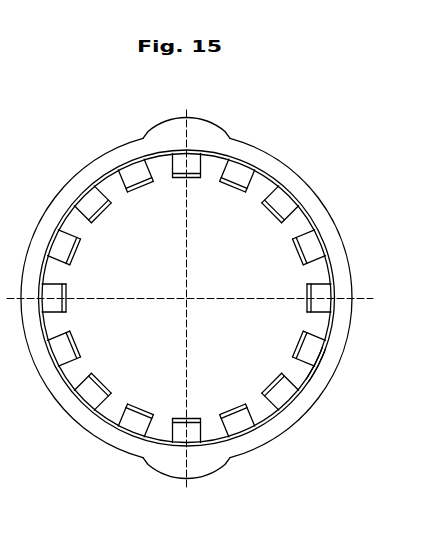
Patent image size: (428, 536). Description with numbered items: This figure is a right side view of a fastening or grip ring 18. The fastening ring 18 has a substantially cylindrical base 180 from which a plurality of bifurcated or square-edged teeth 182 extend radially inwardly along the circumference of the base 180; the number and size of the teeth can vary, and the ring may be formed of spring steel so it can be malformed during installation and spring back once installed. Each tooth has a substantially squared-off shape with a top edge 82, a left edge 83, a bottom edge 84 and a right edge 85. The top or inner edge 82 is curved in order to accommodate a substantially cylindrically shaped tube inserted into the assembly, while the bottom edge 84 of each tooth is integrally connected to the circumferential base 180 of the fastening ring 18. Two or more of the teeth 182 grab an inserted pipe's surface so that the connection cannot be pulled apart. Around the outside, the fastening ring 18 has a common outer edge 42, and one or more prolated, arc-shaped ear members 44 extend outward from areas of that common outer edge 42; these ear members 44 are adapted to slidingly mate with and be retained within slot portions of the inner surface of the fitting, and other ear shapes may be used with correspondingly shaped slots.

The fastening ring 18 is at (363, 129).
The common outer edge 42 is at (351, 229).
The prolated ear member 44 is at (206, 131).
The base 180 is at (217, 265).
The teeth 182 is at (111, 216).
The top edge 82 is at (280, 342).
The left edge 83 is at (289, 365).
The bottom edge 84 is at (335, 346).
The right edge 85 is at (309, 325).